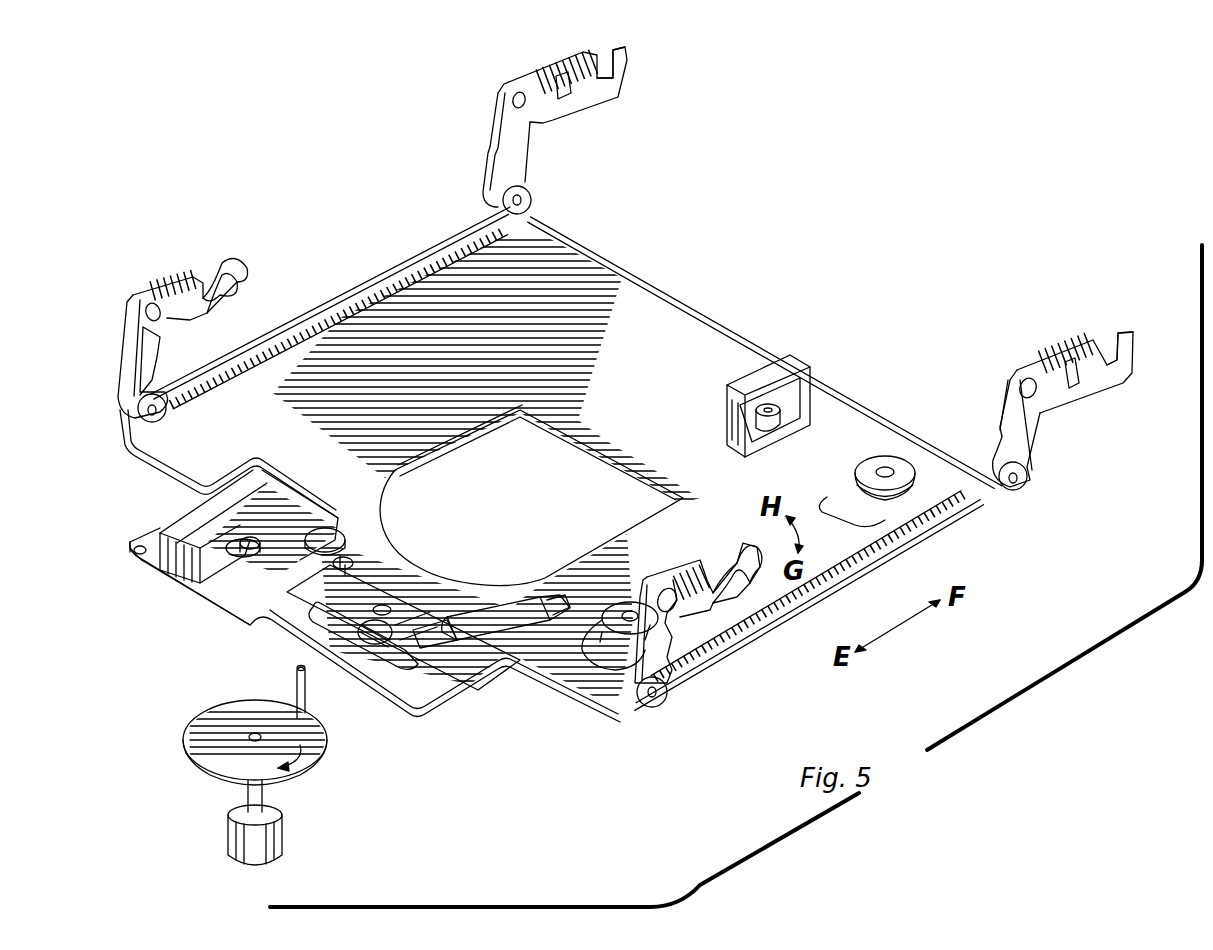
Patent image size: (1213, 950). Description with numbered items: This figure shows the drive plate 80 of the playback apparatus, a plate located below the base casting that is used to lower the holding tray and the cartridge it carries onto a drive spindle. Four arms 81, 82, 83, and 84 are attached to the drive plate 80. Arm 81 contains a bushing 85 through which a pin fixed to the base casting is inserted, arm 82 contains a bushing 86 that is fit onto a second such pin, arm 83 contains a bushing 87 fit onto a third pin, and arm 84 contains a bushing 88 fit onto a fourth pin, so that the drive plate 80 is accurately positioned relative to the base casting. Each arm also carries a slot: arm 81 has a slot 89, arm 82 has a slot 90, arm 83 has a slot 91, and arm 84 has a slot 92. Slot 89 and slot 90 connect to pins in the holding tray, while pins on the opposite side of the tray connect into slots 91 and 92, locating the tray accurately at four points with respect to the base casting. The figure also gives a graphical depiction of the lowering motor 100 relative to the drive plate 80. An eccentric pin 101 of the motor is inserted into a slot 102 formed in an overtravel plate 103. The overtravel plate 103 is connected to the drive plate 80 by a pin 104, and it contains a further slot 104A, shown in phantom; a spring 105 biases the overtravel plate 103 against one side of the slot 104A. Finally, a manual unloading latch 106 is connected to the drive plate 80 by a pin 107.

The drive plate 80 is at (740, 298).
The arm 81 is at (672, 622).
The arm 82 is at (1036, 425).
The arm 83 is at (548, 80).
The arm 84 is at (128, 326).
The bushing 85 is at (665, 585).
The bushing 86 is at (1025, 365).
The bushing 87 is at (511, 84).
The bushing 88 is at (170, 294).
The slot 89 is at (728, 548).
The slot 90 is at (1125, 335).
The slot 91 is at (615, 60).
The slot 92 is at (250, 283).
The lowering motor 100 is at (286, 838).
The eccentric pin 101 is at (308, 683).
The slot 102 is at (308, 610).
The overtravel plate 103 is at (395, 650).
The pin 104 is at (398, 620).
The slot 104A is at (380, 604).
The spring 105 is at (523, 608).
The manual unloading latch 106 is at (165, 578).
The pin 107 is at (325, 535).